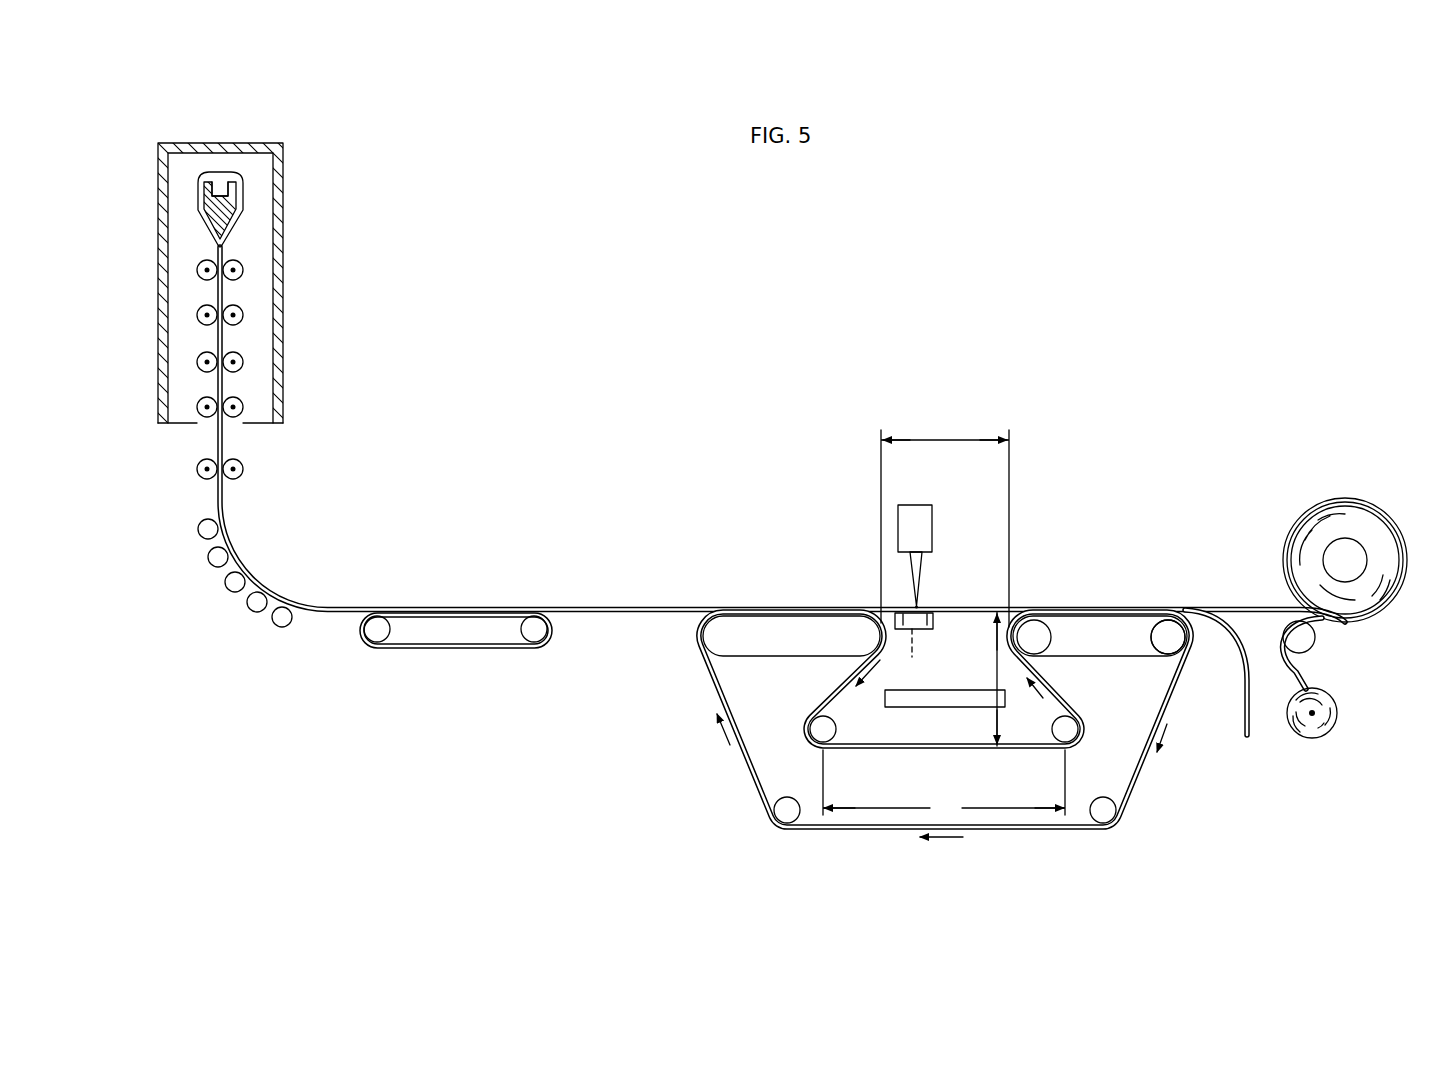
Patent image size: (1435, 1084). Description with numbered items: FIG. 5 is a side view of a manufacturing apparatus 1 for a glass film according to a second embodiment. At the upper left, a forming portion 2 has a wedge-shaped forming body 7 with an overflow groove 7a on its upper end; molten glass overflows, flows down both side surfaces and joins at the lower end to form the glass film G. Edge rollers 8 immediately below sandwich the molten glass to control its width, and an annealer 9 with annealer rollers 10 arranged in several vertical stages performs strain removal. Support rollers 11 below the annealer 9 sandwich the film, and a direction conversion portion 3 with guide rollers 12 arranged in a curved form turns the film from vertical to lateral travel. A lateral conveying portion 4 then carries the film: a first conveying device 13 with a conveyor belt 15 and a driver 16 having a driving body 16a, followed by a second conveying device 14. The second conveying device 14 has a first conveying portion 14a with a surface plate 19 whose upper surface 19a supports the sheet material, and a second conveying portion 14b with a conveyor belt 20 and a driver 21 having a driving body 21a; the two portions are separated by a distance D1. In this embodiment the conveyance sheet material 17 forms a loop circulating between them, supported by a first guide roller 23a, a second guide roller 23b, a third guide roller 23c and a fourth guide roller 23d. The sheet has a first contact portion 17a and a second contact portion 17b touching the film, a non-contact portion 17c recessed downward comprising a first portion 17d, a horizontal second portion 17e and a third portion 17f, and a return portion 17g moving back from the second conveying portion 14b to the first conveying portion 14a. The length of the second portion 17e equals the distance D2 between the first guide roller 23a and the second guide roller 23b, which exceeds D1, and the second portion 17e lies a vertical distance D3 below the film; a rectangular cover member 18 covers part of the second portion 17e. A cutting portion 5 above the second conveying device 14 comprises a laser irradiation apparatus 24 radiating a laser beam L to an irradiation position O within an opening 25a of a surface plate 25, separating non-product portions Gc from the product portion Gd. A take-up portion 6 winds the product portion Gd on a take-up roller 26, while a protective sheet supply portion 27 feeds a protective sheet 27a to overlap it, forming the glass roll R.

The manufacturing apparatus 1 is at (1104, 228).
The forming portion 2 is at (318, 173).
The direction conversion portion 3 is at (217, 573).
The lateral conveying portion 4 is at (463, 685).
The cutting portion 5 is at (977, 550).
The take-up portion 6 is at (1297, 625).
The forming body 7 is at (201, 177).
The overflow groove 7a is at (218, 192).
The edge rollers 8 is at (243, 268).
The annealer 9 is at (226, 335).
The annealer rollers 10 is at (243, 313).
The support rollers 11 is at (244, 468).
The guide rollers 12 is at (198, 529).
The first conveying device 13 is at (468, 653).
The second conveying device 14 is at (915, 711).
The first conveying portion 14a is at (730, 597).
The second conveying portion 14b is at (1092, 597).
The conveyor belt 15 is at (400, 650).
The driver 16 is at (520, 638).
The driving body 16a is at (538, 640).
The conveyance sheet material 17 is at (744, 760).
The first contact portion 17a is at (780, 610).
The second contact portion 17b is at (1050, 610).
The non-contact portion 17c is at (961, 750).
The first portion 17d is at (846, 671).
The second portion 17e is at (880, 750).
The third portion 17f is at (1050, 676).
The return portion 17g is at (877, 832).
The cover member 18 is at (925, 708).
The surface plate 19 is at (765, 658).
The upper surface 19a is at (830, 613).
The conveyor belt 20 is at (1130, 659).
The driver 21 is at (1148, 629).
The driving body 21a is at (1168, 630).
The first guide roller 23a is at (812, 738).
The second guide roller 23b is at (1078, 738).
The third guide roller 23c is at (790, 822).
The fourth guide roller 23d is at (1098, 822).
The laser irradiation apparatus 24 is at (912, 505).
The surface plate 25 is at (933, 625).
The opening 25a is at (913, 656).
The take-up roller 26 is at (1350, 550).
The protective sheet supply portion 27 is at (1297, 742).
The protective sheet 27a is at (1316, 676).
The glass film G is at (220, 340).
The non-product portions Gc is at (1240, 726).
The product portion Gd is at (1247, 603).
The laser beam L is at (918, 574).
The irradiation position O is at (918, 605).
The glass roll R is at (1307, 507).
The separation distance D1 is at (945, 522).
The separation distance D2 is at (944, 785).
The separation distance D3 is at (992, 676).